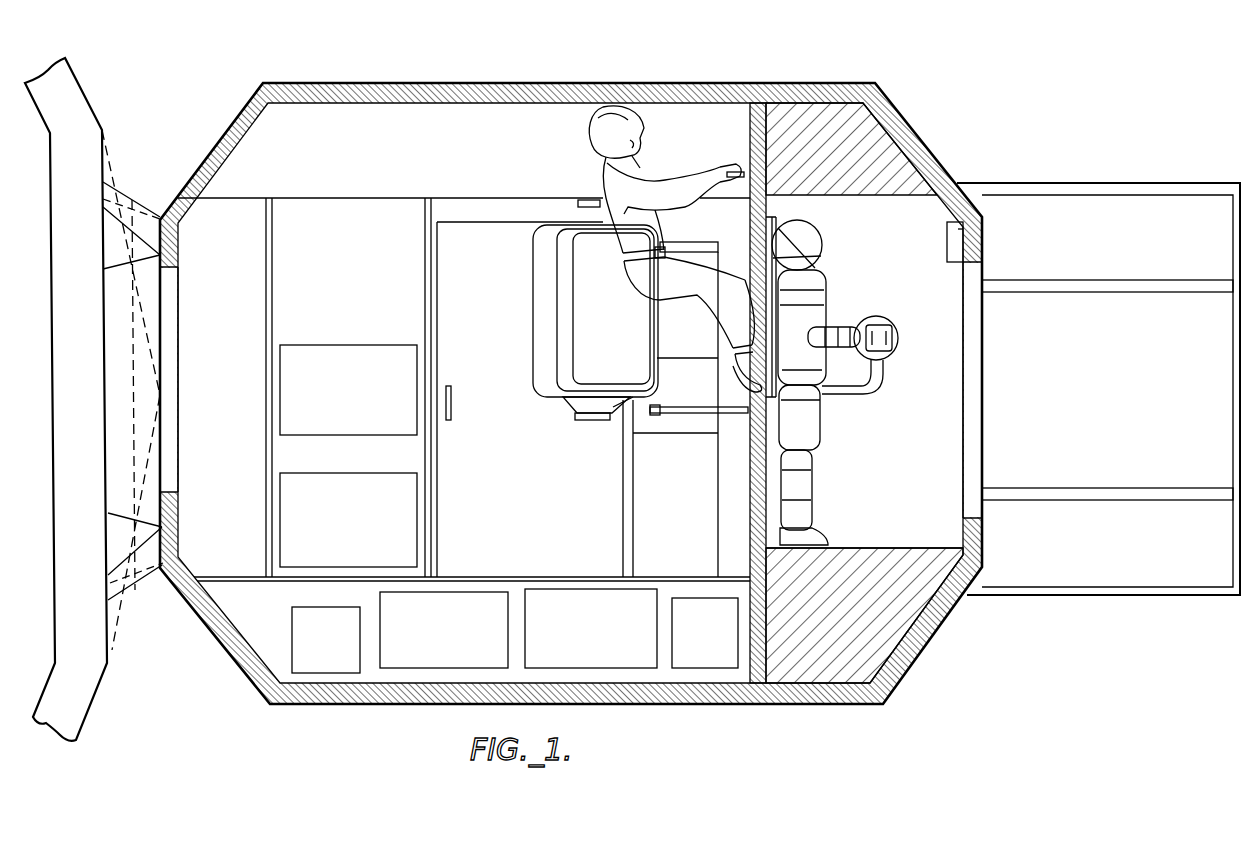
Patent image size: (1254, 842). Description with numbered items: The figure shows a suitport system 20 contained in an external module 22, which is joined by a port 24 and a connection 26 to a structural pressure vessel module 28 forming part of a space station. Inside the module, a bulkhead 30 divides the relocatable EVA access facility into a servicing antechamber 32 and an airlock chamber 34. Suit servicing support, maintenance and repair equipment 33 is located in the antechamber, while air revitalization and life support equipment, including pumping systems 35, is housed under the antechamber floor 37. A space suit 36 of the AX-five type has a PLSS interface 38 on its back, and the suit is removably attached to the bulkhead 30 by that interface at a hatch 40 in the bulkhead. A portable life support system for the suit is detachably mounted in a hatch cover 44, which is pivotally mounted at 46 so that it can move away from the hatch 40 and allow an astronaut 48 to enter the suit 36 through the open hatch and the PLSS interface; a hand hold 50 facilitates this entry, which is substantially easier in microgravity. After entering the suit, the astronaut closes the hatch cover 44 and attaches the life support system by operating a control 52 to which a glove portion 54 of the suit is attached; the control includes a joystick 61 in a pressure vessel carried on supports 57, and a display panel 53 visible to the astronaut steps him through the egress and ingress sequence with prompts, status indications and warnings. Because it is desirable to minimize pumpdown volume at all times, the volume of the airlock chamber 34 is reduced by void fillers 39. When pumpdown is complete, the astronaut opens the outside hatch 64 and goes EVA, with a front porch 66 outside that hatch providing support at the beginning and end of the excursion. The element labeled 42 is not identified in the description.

The suitport system 20 is at (585, 449).
The external module 22 is at (438, 83).
The port 24 is at (172, 352).
The connection 26 is at (148, 214).
The structural pressure vessel module 28 is at (78, 110).
The bulkhead 30 is at (750, 507).
The servicing antechamber 32 is at (502, 436).
The suit servicing support, maintenance and repair equipment 33 is at (455, 240).
The airlock chamber 34 is at (896, 475).
The pumping systems 35 is at (300, 647).
The space suit 36 is at (808, 410).
The antechamber floor 37 is at (490, 576).
The PLSS interface 38 is at (822, 254).
The void fillers 39 is at (900, 148).
The hatch 40 is at (782, 226).
The seat back cushion 42 is at (600, 300).
The hatch cover 44 is at (545, 258).
The pivot mounting 46 is at (655, 415).
The astronaut 48 is at (602, 200).
The hand hold 50 is at (740, 170).
The control 52 is at (920, 328).
The display panel 53 is at (958, 243).
The glove portion 54 is at (868, 330).
The supports 57 is at (887, 380).
The joystick 61 is at (882, 328).
The hatch 64 is at (985, 399).
The front porch 66 is at (1113, 183).